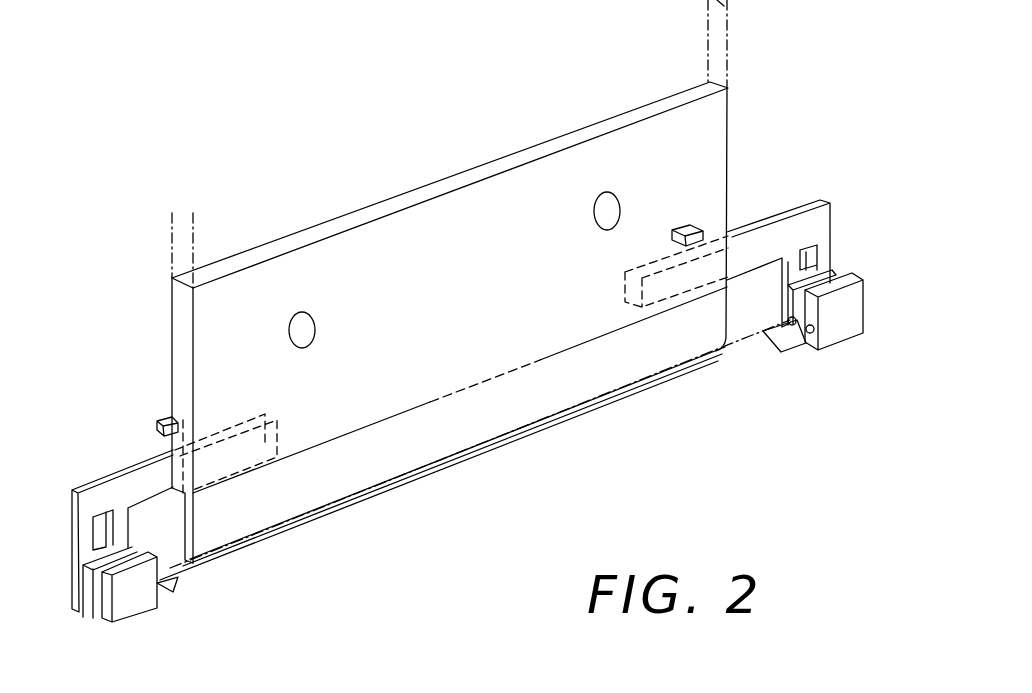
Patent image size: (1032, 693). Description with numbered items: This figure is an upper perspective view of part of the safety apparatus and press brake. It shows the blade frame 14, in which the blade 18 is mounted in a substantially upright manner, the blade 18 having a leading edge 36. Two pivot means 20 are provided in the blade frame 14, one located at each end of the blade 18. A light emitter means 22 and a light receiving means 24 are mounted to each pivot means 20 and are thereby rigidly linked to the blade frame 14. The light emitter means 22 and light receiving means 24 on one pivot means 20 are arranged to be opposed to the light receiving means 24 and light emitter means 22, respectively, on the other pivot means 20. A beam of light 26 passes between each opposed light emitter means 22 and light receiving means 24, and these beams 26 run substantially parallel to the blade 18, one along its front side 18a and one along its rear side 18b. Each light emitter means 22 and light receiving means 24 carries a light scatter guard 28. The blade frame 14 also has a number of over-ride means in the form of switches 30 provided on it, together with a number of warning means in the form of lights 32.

The blade frame 14 is at (729, 117).
The blade 18 is at (590, 365).
The front side 18a is at (466, 542).
The rear side 18b is at (103, 471).
The pivot means 20 is at (148, 483).
The light emitter means 22 is at (132, 605).
The light receiving means 24 is at (85, 605).
The beam of light 26 is at (258, 553).
The light scatter guard 28 is at (170, 590).
The switch 30 is at (170, 420).
The light 32 is at (318, 322).
The leading edge 36 is at (326, 513).